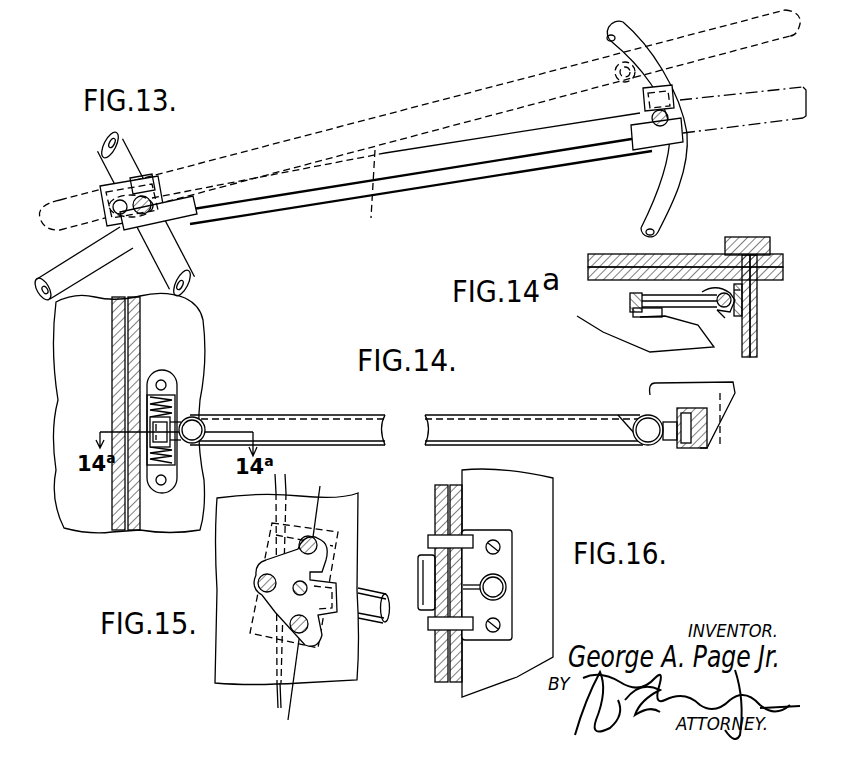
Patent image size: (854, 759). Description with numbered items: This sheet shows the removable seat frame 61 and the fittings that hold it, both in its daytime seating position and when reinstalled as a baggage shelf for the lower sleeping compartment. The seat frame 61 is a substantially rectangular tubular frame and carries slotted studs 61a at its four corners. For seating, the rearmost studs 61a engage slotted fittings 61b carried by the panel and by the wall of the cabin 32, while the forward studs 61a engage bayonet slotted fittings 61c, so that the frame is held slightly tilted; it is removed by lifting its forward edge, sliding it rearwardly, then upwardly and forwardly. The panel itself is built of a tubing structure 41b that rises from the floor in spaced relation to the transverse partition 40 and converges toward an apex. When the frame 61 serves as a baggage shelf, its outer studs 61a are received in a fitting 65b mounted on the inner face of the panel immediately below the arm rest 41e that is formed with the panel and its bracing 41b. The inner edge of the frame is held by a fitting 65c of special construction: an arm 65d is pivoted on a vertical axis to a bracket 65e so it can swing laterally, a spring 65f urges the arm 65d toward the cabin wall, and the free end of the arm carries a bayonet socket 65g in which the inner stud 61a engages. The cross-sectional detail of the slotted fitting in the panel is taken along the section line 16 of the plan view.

In FIG. 14a, the passenger cabin 32 is at (700, 253).
In FIG. 14, the passenger cabin 32 is at (112, 388).
In FIG. 15, the passenger cabin 32 is at (287, 589).
In FIG. 16, the passenger cabin 32 is at (466, 509).
In FIG. 14a, the transverse partition 40 is at (758, 317).
In FIG. 14, the transverse partition 40 is at (128, 412).
In FIG. 13, the tubing structure 41b is at (186, 257).
In FIG. 14, the arm rest 41e is at (735, 391).
In FIG. 13, the seat frame 61 is at (393, 192).
In FIG. 14a, the seat frame 61 is at (626, 342).
In FIG. 14, the seat frame 61 is at (425, 432).
In FIG. 13, the slotted stud 61a is at (150, 200).
In FIG. 14a, the slotted stud 61a is at (645, 317).
In FIG. 14, the slotted stud 61a is at (203, 422).
In FIG. 15, the slotted stud 61a is at (307, 585).
In FIG. 13, the slotted fitting 61b is at (147, 186).
In FIG. 15, the slotted fitting 61b is at (318, 556).
In FIG. 16, the slotted fitting 61b is at (425, 612).
In FIG. 13, the bayonet slotted fitting 61c is at (688, 118).
In FIG. 14, the fitting 65b is at (700, 448).
In FIG. 14a, the fitting 65c is at (715, 324).
In FIG. 14, the fitting 65c is at (152, 492).
In FIG. 14a, the arm 65d is at (702, 310).
In FIG. 14a, the bracket 65e is at (740, 312).
In FIG. 14, the bracket 65e is at (178, 394).
In FIG. 14a, the spring 65f is at (745, 293).
In FIG. 14, the spring 65f is at (180, 406).
In FIG. 14a, the bayonet socket 65g is at (630, 300).
In FIG. 14, the bayonet socket 65g is at (150, 425).
In FIG. 15, the section line 16- 16 is at (316, 490).